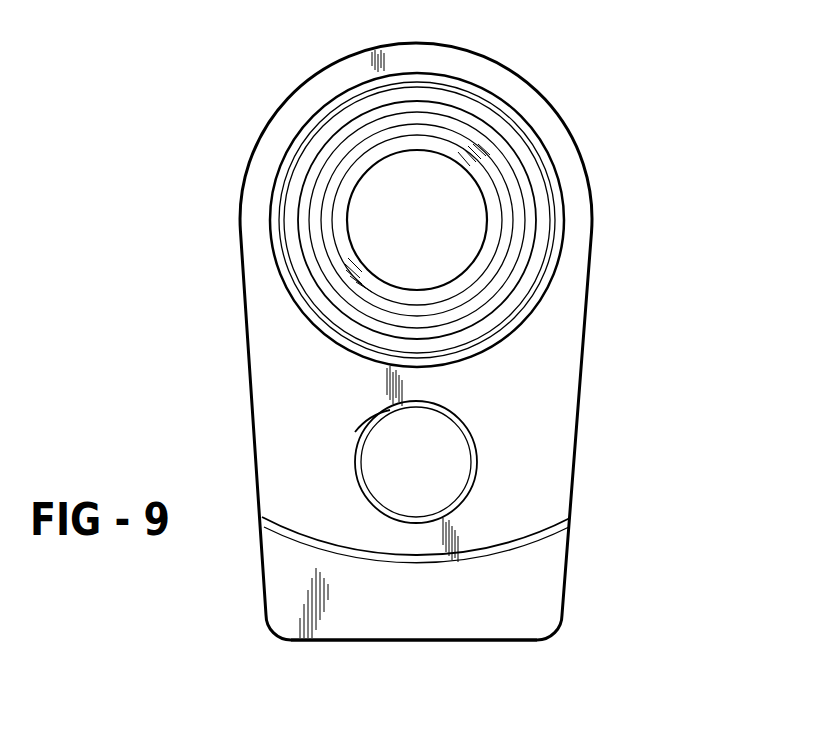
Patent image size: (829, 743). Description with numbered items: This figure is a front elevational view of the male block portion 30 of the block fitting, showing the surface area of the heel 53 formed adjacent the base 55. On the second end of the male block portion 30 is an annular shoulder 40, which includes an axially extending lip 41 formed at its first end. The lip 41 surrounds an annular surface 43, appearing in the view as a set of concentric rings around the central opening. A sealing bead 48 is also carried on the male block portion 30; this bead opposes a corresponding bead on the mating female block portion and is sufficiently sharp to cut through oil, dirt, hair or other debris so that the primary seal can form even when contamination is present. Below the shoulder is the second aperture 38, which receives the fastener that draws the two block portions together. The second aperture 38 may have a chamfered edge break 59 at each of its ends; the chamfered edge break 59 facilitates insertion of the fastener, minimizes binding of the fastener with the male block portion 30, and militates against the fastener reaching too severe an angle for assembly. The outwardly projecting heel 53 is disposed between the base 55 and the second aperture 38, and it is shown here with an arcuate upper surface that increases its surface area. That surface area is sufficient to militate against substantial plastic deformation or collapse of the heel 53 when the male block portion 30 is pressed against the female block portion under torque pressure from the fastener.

The male block portion 30 is at (495, 56).
The axially extending lip 41 is at (498, 110).
The sealing bead 48 is at (493, 157).
The annular surface 43 is at (530, 202).
The annular shoulder 40 is at (512, 226).
The second aperture 38 is at (424, 462).
The chamfered edge break 59 is at (366, 434).
The heel 53 is at (400, 612).
The base 55 is at (415, 645).